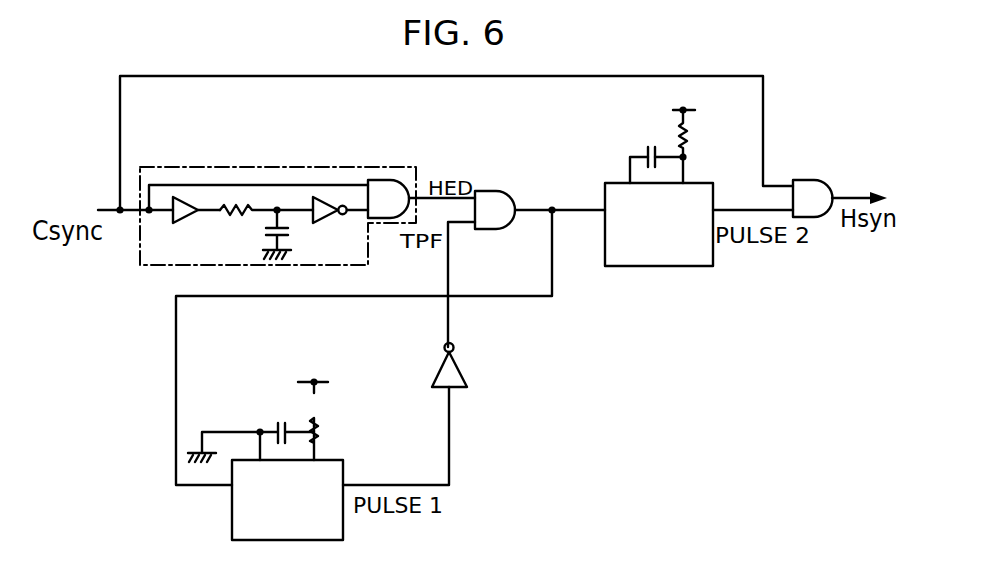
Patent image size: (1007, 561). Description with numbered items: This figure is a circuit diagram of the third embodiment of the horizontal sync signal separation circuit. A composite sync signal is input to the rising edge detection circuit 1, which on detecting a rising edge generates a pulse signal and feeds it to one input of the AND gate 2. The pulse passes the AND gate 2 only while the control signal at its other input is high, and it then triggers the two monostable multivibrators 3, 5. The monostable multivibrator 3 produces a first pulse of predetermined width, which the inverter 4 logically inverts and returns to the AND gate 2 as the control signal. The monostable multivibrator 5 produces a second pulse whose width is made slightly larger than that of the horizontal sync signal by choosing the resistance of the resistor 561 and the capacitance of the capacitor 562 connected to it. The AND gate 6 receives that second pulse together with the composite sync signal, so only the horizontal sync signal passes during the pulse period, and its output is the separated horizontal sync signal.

The rising edge detection circuit 1 is at (260, 166).
The AND gate 2 is at (493, 191).
The monostable multivibrator 3 is at (232, 518).
The inverter 4 is at (462, 371).
The monostable multivibrator 5 is at (658, 202).
The AND gate 6 is at (818, 180).
The resistor 561 is at (681, 126).
The capacitor 562 is at (647, 152).